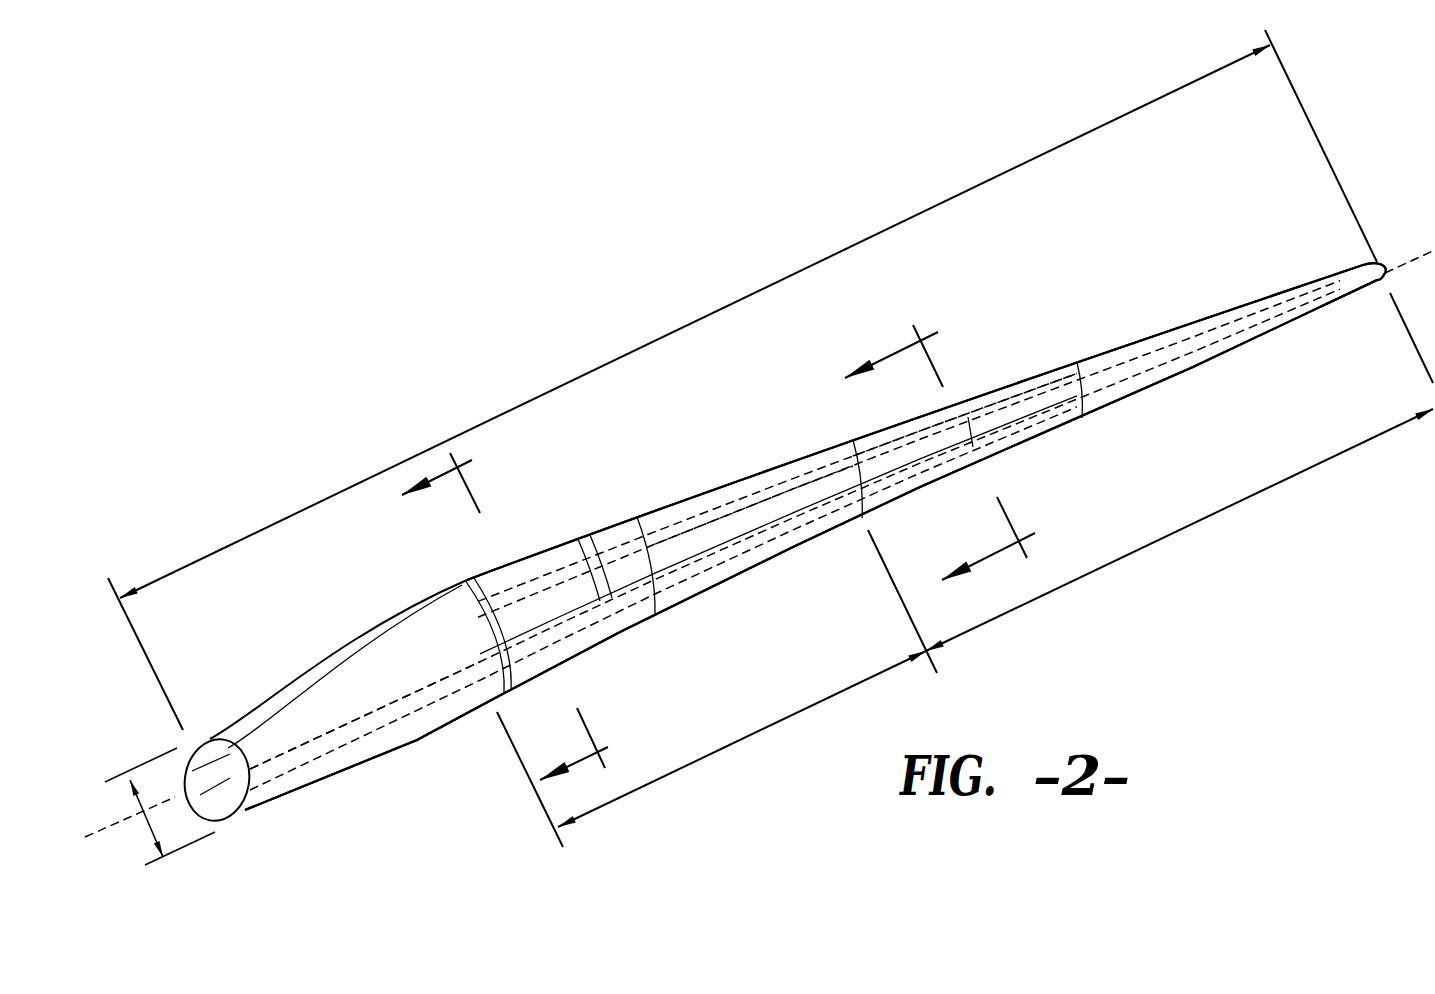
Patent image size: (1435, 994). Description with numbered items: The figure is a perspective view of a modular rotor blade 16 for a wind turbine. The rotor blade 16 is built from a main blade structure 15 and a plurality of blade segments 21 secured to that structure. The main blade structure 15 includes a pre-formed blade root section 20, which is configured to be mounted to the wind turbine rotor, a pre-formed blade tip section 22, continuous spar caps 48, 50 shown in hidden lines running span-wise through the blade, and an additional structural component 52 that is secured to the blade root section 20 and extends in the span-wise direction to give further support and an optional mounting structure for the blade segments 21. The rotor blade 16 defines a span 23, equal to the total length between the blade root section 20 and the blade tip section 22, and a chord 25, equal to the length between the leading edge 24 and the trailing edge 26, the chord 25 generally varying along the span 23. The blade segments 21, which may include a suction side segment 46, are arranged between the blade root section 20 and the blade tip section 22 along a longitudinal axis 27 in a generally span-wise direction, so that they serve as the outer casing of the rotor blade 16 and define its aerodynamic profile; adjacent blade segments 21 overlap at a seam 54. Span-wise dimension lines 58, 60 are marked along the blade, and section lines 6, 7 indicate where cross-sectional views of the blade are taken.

The section line 6- 6 is at (505, 616).
The section line 7- 7 is at (935, 472).
The main blade structure 15 is at (367, 718).
The rotor blade 16 is at (403, 338).
The blade root section 20 is at (230, 722).
The blade segment 21 is at (655, 508).
The blade tip section 22 is at (1240, 347).
The span 23 is at (713, 313).
The leading edge 24 is at (743, 570).
The chord 25 is at (138, 808).
The trailing edge 26 is at (747, 484).
The longitudinal axis 27 is at (183, 850).
The suction side segment 46 is at (1025, 393).
The continuous spar cap 48 is at (198, 772).
The continuous spar cap 50 is at (300, 757).
The additional structural component 52 is at (693, 520).
The seam 54 is at (585, 537).
The first span portion 58 is at (707, 753).
The second span portion 60 is at (1147, 543).